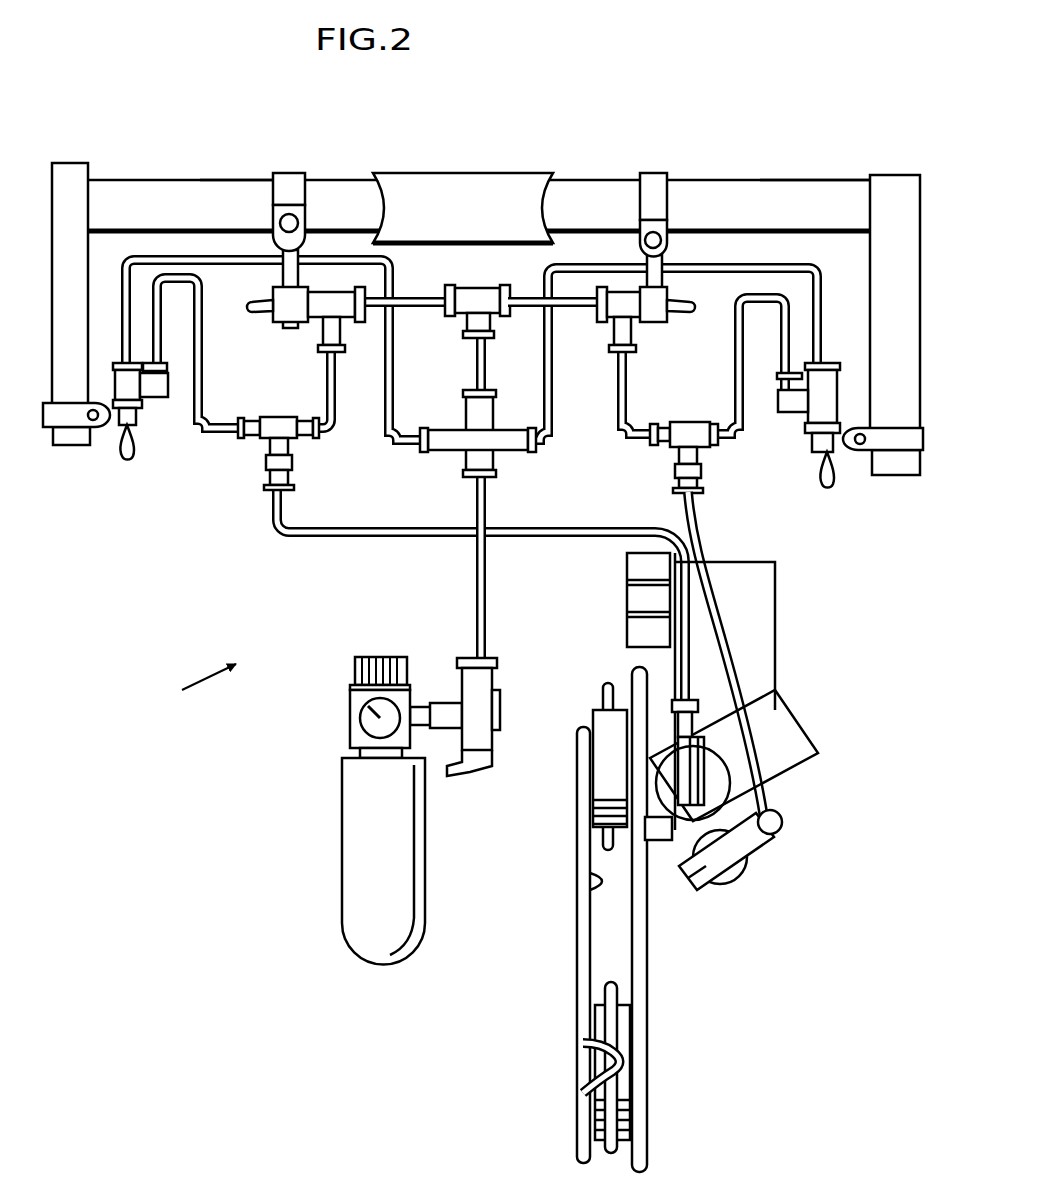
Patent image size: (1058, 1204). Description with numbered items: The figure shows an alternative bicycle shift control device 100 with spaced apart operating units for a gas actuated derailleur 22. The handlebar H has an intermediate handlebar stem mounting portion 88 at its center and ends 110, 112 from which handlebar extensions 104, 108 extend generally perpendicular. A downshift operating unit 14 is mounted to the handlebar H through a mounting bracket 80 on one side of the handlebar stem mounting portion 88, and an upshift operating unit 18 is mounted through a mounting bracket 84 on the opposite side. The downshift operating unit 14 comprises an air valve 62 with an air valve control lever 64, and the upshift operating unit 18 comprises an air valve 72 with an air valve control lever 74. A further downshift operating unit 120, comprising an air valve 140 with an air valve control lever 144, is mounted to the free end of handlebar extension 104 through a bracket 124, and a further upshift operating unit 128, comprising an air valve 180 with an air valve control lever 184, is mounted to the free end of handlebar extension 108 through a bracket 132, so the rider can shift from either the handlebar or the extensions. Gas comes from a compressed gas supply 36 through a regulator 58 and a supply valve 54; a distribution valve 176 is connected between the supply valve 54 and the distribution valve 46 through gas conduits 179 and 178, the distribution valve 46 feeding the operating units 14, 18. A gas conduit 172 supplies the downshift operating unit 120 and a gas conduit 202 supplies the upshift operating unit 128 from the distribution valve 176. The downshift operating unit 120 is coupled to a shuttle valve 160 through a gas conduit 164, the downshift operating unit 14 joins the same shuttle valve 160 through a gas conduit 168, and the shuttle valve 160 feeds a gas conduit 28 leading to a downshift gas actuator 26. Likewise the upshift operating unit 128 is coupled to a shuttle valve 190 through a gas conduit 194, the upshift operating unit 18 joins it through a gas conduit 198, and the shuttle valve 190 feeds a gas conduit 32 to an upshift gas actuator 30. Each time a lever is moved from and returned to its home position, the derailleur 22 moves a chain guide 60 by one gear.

The bicycle shift control device 100 is at (177, 695).
The handlebar H is at (190, 180).
The handlebar extension 104 is at (80, 163).
The handlebar extension 108 is at (889, 175).
The end of handlebar 110 is at (133, 180).
The end of handlebar 112 is at (828, 181).
The handlebar stem mounting portion 88 is at (460, 180).
The mounting bracket 80 is at (287, 173).
The mounting bracket 84 is at (652, 173).
The downshift operating unit 14 is at (314, 326).
The upshift operating unit 18 is at (646, 328).
The air valve control lever 64 is at (248, 304).
The air valve control lever 74 is at (697, 305).
The distribution valve 46 is at (470, 296).
The gas conduit 178 is at (484, 366).
The distribution valve 176 is at (445, 432).
The gas conduit 179 is at (477, 613).
The gas conduit 172 is at (127, 260).
The gas conduit 198 is at (615, 418).
The gas conduit 202 is at (808, 262).
The air valve 140 is at (170, 386).
The gas conduit 164 is at (203, 432).
The gas conduit 194 is at (742, 376).
The shuttle valve 160 is at (278, 420).
The shuttle valve 190 is at (689, 424).
The air valve 62 is at (345, 352).
The air valve 72 is at (617, 344).
The gas conduit 168 is at (340, 412).
The gas conduit 28 is at (372, 528).
The gas conduit 32 is at (697, 540).
The downshift operating unit 120 is at (153, 415).
The air valve 180 is at (836, 363).
The air valve control lever 144 is at (130, 457).
The air valve control lever 184 is at (831, 482).
The bracket 124 is at (68, 427).
The upshift operating unit 128 is at (814, 463).
The bracket 132 is at (908, 440).
The gas actuated derailleur 22 is at (758, 622).
The downshift gas actuator 26 is at (690, 817).
The upshift gas actuator 30 is at (784, 838).
The compressed gas supply 36 is at (355, 845).
The supply valve 54 is at (490, 706).
The regulator 58 is at (350, 720).
The chain guide 60 is at (578, 890).